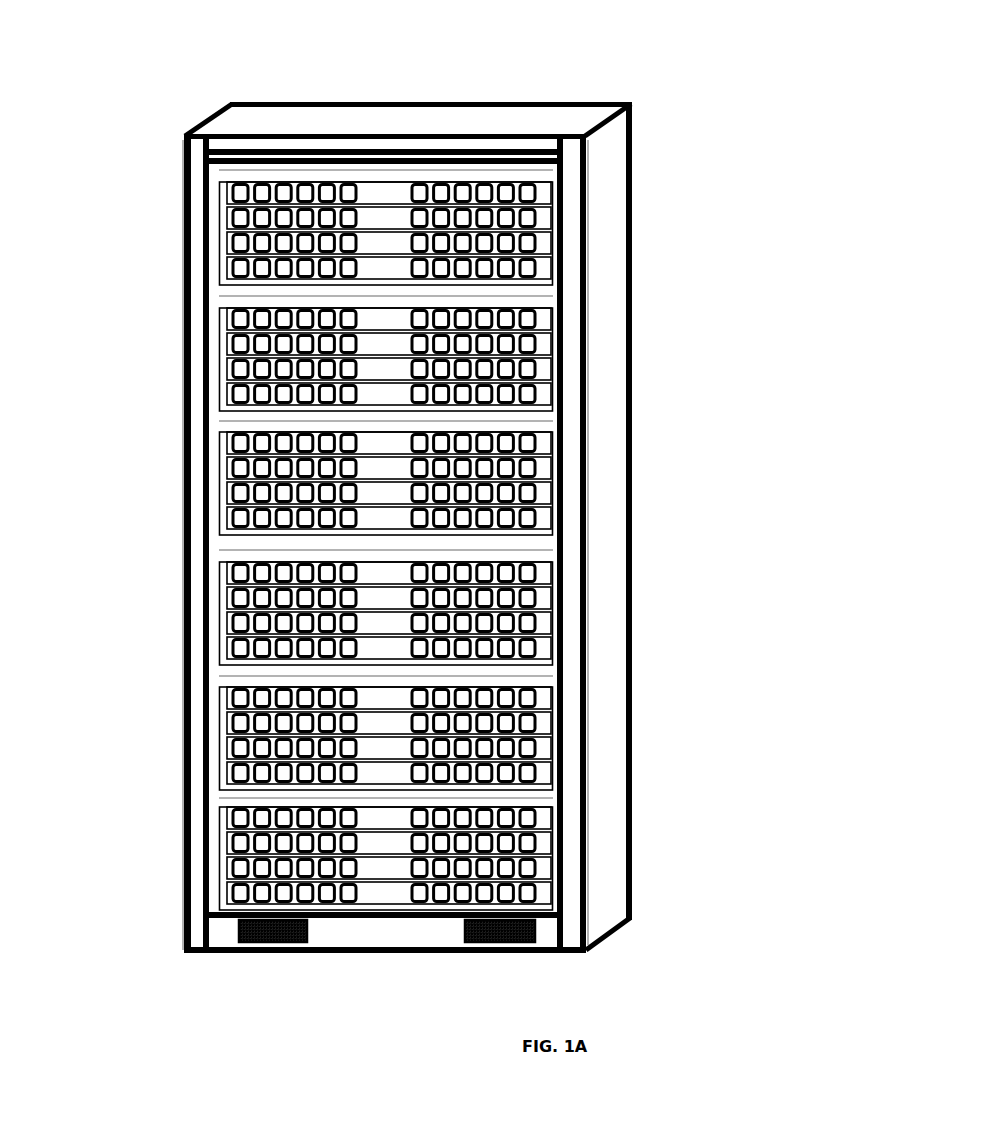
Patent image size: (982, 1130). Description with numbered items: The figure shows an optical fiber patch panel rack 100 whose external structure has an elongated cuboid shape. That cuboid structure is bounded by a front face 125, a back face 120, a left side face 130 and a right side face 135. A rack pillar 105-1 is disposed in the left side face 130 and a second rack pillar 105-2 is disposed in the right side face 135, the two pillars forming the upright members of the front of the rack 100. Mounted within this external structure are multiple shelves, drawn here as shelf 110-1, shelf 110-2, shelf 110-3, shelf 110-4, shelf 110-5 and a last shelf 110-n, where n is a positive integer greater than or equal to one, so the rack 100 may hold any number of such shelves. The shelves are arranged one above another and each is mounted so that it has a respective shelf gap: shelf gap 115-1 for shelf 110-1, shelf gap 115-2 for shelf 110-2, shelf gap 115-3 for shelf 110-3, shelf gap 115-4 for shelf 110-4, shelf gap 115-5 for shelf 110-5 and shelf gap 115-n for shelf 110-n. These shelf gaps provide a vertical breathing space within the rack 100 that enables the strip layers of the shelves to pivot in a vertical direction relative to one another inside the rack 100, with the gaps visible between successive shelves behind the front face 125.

The optical fiber patch panel rack 100 is at (659, 80).
The rack pillar 105-1 is at (197, 163).
The rack pillar 105-2 is at (572, 163).
The shelf 110-1 is at (172, 287).
The shelf 110-2 is at (172, 309).
The shelf 110-3 is at (172, 433).
The shelf 110-4 is at (172, 563).
The shelf 110-5 is at (172, 688).
The shelf 110-n is at (172, 911).
The shelf gap 115-1 is at (538, 172).
The shelf gap 115-2 is at (538, 293).
The shelf gap 115-3 is at (538, 423).
The shelf gap 115-4 is at (538, 550).
The shelf gap 115-5 is at (538, 676).
The shelf gap 115-n is at (538, 800).
The back face 120 is at (652, 249).
The front face 125 is at (377, 930).
The left side face 130 is at (185, 930).
The right side face 135 is at (615, 608).